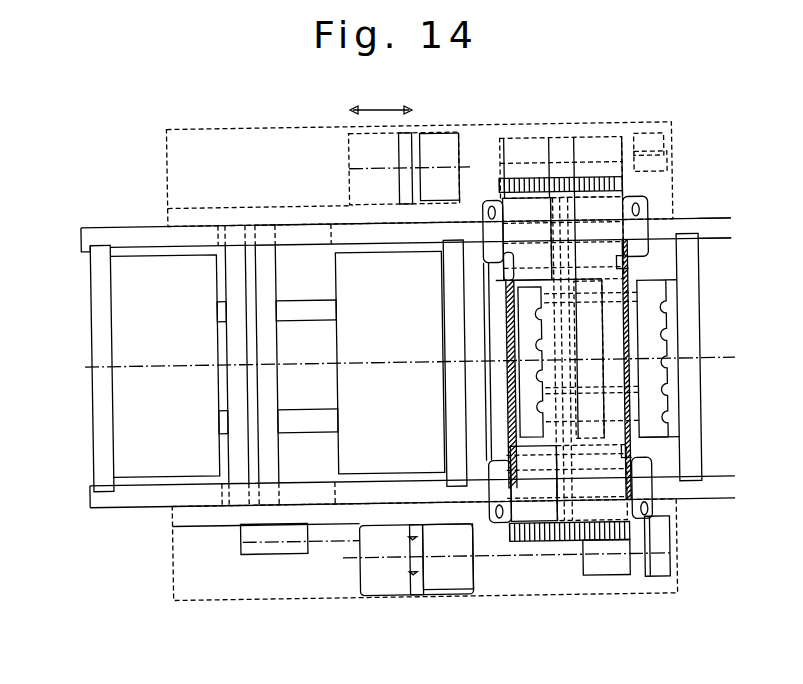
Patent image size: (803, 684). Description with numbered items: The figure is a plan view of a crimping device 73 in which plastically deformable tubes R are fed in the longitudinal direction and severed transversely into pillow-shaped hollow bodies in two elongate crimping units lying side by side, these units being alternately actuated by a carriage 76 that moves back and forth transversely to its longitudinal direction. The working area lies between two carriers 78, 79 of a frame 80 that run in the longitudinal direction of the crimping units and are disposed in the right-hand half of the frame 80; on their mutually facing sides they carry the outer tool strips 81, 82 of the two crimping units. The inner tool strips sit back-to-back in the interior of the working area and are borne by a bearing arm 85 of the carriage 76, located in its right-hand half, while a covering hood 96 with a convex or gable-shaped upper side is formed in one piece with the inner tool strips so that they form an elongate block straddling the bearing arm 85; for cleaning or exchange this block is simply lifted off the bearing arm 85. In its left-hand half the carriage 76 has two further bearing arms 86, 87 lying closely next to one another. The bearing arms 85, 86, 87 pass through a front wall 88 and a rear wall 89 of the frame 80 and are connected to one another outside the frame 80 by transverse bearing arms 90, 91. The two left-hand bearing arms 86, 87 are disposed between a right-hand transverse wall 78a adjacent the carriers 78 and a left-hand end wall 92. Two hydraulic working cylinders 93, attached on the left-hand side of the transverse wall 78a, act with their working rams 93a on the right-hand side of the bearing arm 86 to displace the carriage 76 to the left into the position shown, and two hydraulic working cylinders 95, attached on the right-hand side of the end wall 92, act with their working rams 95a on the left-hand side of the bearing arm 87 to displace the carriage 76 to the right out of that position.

The crimping device 73 is at (697, 181).
The carriage 76 is at (217, 127).
The carrier 78 is at (493, 280).
The right-hand transverse wall 78a is at (455, 250).
The carrier 79 is at (690, 262).
The frame 80 is at (716, 208).
The outer tool strip 81 is at (505, 455).
The outer tool strip 82 is at (668, 407).
The bearing arm 85 is at (558, 525).
The bearing arm 86 is at (268, 472).
The bearing arm 87 is at (238, 465).
The front wall 88 is at (110, 502).
The rear wall 89 is at (145, 242).
The bearing arm 90 is at (183, 518).
The bearing arm 91 is at (293, 217).
The left-hand end wall 92 is at (102, 412).
The hydraulic working cylinder 93 is at (401, 318).
The working ram 93a is at (287, 312).
The hydraulic working cylinder 95 is at (125, 280).
The working ram 95a is at (218, 424).
The covering hood 96 is at (582, 342).
The plastically deformable tube R is at (648, 432).